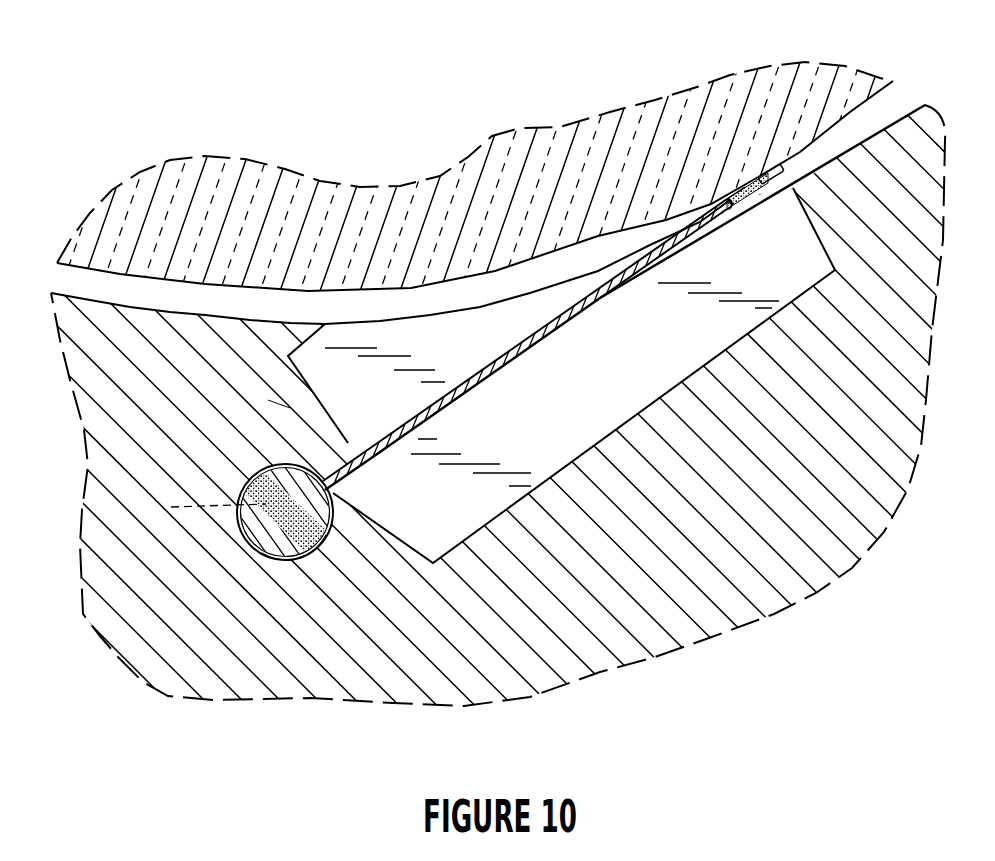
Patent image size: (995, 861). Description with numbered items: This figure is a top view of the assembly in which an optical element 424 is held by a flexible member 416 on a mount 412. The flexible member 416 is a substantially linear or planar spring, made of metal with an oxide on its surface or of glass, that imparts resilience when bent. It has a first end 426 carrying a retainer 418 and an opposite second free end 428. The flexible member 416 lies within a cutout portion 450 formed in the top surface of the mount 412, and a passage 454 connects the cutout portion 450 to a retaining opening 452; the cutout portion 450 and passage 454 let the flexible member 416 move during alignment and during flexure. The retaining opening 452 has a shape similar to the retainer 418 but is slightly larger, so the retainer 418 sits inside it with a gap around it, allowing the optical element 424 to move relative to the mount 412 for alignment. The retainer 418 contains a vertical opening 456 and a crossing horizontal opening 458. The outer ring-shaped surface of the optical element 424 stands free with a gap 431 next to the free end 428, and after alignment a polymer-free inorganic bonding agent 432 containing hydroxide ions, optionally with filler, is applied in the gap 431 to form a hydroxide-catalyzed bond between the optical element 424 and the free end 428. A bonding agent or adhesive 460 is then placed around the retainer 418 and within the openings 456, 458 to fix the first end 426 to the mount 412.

The mount 412 is at (706, 611).
The flexible member 416 is at (560, 326).
The retainer 418 is at (265, 532).
The optical element 424 is at (228, 178).
The first end 426 is at (277, 402).
The second free end 428 is at (787, 170).
The gap 431 is at (714, 192).
The polymer-free inorganic bonding agent 432 is at (742, 178).
The cutout portion 450 is at (625, 318).
The retaining opening 452 is at (284, 561).
The passage 454 is at (364, 464).
The vertical opening 456 is at (171, 507).
The horizontal opening 458 is at (314, 556).
The bonding agent or adhesive 460 is at (255, 483).